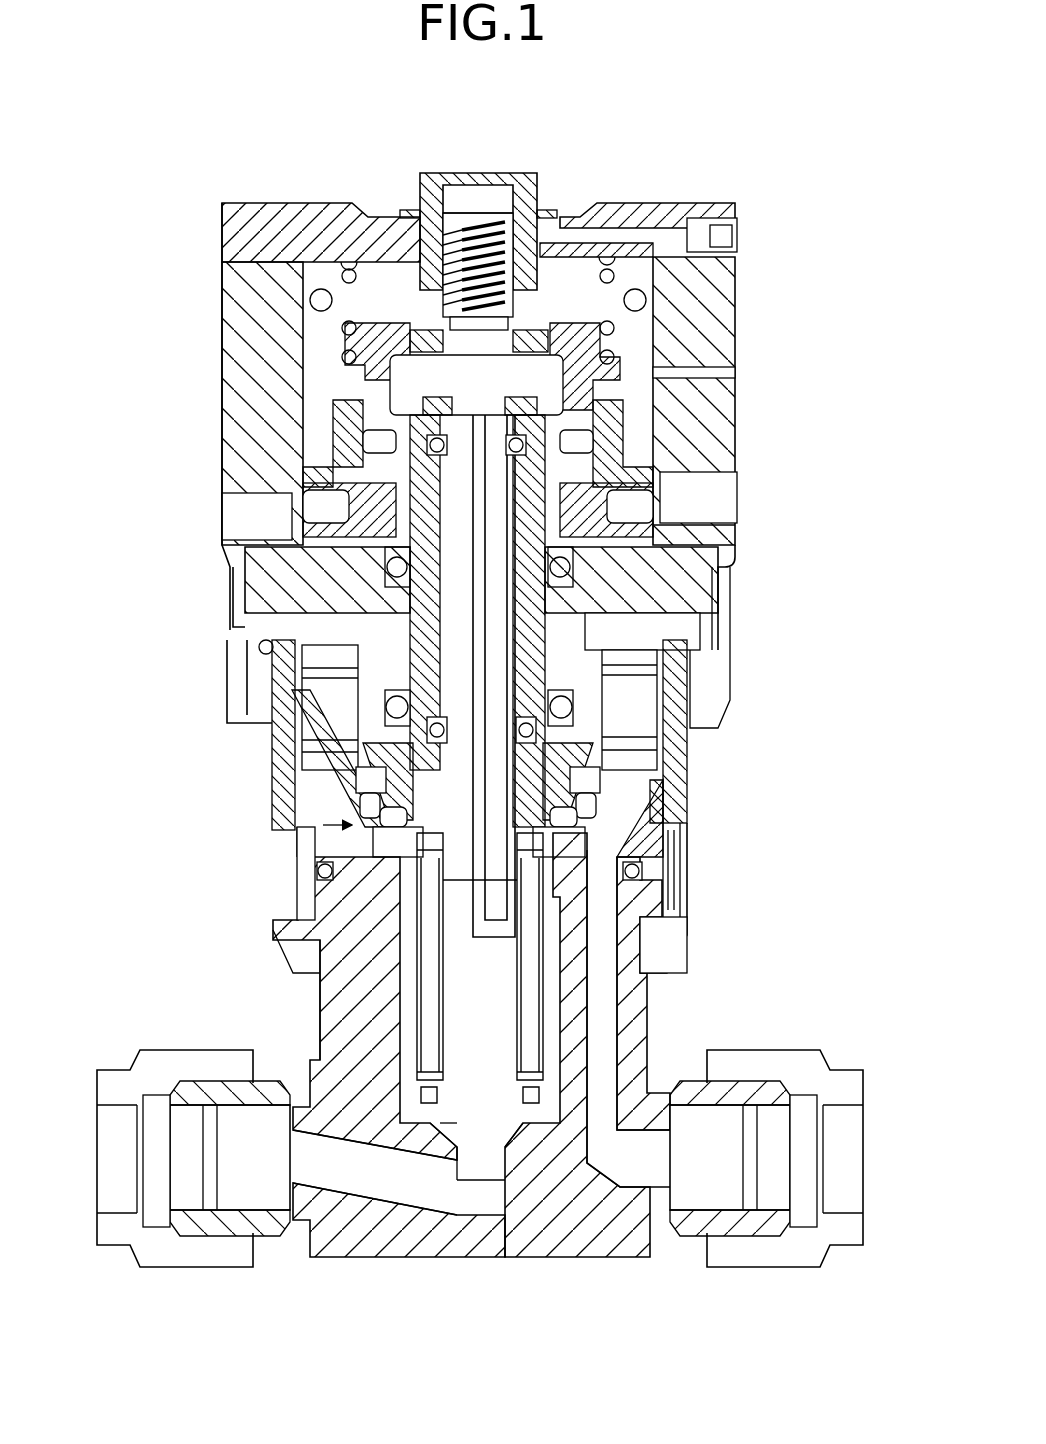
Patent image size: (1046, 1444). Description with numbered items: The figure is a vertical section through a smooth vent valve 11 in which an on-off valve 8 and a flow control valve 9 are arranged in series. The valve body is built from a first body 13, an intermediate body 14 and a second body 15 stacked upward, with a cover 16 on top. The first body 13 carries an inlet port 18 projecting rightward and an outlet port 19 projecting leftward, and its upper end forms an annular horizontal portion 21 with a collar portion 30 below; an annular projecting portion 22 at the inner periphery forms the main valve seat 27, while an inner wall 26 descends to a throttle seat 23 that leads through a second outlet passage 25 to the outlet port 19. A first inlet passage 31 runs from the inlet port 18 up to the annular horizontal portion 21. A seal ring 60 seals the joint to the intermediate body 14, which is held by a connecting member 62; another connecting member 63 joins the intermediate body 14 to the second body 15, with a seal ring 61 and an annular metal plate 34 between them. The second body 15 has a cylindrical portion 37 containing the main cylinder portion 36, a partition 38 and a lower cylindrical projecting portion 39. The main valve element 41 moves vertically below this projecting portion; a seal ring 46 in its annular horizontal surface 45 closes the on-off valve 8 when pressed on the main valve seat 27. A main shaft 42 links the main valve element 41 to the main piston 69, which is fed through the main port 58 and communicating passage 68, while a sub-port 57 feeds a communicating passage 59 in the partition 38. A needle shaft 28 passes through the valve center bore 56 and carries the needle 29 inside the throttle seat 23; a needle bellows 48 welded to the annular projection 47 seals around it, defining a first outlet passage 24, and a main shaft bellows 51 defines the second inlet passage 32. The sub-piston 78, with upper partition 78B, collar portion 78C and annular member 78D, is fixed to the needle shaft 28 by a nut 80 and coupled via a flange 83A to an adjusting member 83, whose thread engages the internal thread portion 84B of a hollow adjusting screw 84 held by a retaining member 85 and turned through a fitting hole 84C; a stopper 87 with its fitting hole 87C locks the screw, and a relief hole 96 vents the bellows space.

The on-off valve 8 is at (290, 825).
The flow control valve 9 is at (470, 1170).
The smooth vent valve 11 is at (216, 201).
The first body 13 is at (625, 1245).
The intermediate body 14 is at (690, 808).
The second body (bonnet) 15 is at (735, 560).
The cover 16 is at (285, 213).
The inlet port 18 is at (725, 1200).
The outlet port 19 is at (233, 1205).
The annular horizontal portion 21 is at (290, 855).
The annular projecting portion 22 is at (590, 838).
The throttle seat (sub-valve seat) 23 is at (555, 1100).
The first outlet passage 24 is at (400, 995).
The second outlet passage 25 is at (412, 1185).
The inner wall 26 is at (575, 1100).
The main valve seat 27 is at (320, 824).
The needle shaft 28 is at (410, 952).
The sub-valve element (needle) 29 is at (447, 1180).
The collar portion 30 is at (650, 900).
The first inlet passage 31 is at (605, 1013).
The second inlet passage 32 is at (700, 823).
The annular metal plate 34 is at (695, 628).
The main cylinder portion 36 is at (302, 370).
The cylindrical portion 37 is at (222, 312).
The partition 38 is at (260, 575).
The cylindrical projecting portion 39 is at (600, 660).
The main valve element 41 is at (598, 800).
The main shaft 42 is at (545, 680).
The annular horizontal surface 45 is at (590, 840).
The seal ring 46 is at (600, 802).
The annular projection 47 is at (370, 895).
The needle bellows (sub-shaft bellows) 48 is at (410, 1035).
The main shaft bellows 51 is at (340, 768).
The valve center bore 56 is at (418, 808).
The sub-port 57 is at (228, 515).
The main port 58 is at (725, 500).
The communicating passage 59 is at (340, 580).
The seal ring 60 is at (315, 871).
The seal ring 61 is at (258, 645).
The connecting member 62 is at (665, 945).
The connecting member 63 is at (250, 705).
The communicating passage 68 is at (665, 527).
The main piston 69 is at (622, 445).
The sub-piston 78 is at (585, 355).
The upper partition 78B is at (562, 340).
The collar portion 78C is at (325, 375).
The annular member 78D is at (415, 332).
The nut 80 is at (432, 398).
The adjusting member 83 is at (455, 235).
The flange 83A is at (522, 362).
The hollow adjusting screw 84 is at (541, 188).
The internal thread portion 84B is at (490, 230).
The fitting hole 84C is at (514, 178).
The retaining member 85 is at (405, 212).
The stopper 87 is at (640, 226).
The fitting hole 87C is at (737, 240).
The relief hole 96 is at (715, 370).